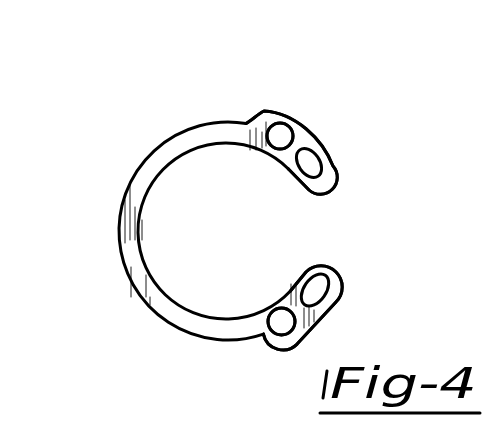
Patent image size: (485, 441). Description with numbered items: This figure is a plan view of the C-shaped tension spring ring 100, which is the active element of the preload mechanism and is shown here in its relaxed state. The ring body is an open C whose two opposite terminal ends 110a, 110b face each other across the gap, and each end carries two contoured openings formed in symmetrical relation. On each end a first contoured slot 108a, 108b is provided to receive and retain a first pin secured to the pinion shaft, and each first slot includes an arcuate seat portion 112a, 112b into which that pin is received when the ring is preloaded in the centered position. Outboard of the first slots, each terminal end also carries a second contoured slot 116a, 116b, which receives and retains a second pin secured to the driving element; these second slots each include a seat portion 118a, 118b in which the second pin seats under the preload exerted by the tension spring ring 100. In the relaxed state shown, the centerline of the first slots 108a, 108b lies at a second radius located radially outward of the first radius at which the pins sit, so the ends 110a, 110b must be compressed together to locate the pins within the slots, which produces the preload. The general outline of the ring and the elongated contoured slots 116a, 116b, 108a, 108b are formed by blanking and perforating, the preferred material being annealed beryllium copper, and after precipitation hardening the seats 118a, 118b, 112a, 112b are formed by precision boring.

The tension spring ring 100 is at (140, 182).
The terminal end 110a is at (337, 153).
The terminal end 110b is at (337, 283).
The first contoured slot 108a is at (310, 165).
The first contoured slot 108b is at (322, 296).
The arcuate seat portion 112a is at (320, 175).
The arcuate seat portion 112b is at (308, 282).
The second contoured slot 116a is at (276, 326).
The second contoured slot 116b is at (279, 133).
The seat portion 118a is at (300, 326).
The seat portion 118b is at (291, 125).